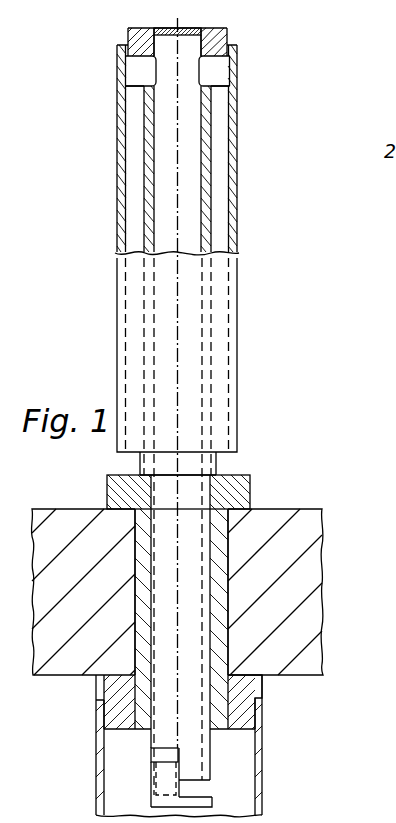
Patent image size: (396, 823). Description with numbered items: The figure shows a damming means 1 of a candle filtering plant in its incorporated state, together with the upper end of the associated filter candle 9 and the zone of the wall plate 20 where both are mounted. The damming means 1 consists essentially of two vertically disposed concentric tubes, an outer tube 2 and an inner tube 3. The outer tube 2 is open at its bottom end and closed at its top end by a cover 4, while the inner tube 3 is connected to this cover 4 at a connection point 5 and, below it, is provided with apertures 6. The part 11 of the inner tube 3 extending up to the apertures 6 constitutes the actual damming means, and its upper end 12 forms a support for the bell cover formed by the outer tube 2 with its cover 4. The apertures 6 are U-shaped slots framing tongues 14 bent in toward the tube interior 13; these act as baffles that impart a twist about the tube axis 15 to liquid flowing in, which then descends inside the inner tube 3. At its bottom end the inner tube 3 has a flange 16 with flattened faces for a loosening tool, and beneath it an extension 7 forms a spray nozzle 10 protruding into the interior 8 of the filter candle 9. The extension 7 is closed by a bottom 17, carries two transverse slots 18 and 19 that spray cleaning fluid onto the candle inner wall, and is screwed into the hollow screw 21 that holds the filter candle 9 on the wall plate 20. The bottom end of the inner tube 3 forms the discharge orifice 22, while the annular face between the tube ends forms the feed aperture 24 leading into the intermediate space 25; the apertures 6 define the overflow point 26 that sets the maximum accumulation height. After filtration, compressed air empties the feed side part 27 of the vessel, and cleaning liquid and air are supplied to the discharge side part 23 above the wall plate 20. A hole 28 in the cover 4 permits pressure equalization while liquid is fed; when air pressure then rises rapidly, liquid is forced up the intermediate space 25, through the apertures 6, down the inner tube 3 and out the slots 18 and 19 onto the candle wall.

The damming means 1 is at (117, 323).
The outer tube 2 is at (121, 122).
The inner tube 3 is at (147, 140).
The cover 4 is at (225, 36).
The connection point 5 is at (205, 43).
The apertures 6 is at (155, 69).
The extension 7 is at (205, 532).
The interior of the filter candle 8 is at (234, 755).
The filter candle 9 is at (260, 810).
The spray nozzle 10 is at (151, 778).
The part of the inner tube 11 is at (156, 179).
The upper end of the inner tube 12 is at (117, 48).
The tube interior 13 is at (168, 203).
The tongues 14 is at (148, 83).
The tube axis 15 is at (136, 249).
The flange 16 is at (217, 466).
The bottom 17 is at (162, 801).
The transverse slot 18 is at (197, 790).
The transverse slot 19 is at (155, 751).
The wall plate 20 is at (285, 662).
The hollow screw 21 is at (232, 497).
The discharge orifice 22 is at (200, 446).
The discharge side part of the vessel interior 23 is at (57, 508).
The feed aperture 24 is at (140, 460).
The intermediate space 25 is at (140, 162).
The overflow point 26 is at (145, 86).
The feed side part of the vessel interior 27 is at (57, 702).
The hole 28 is at (130, 31).